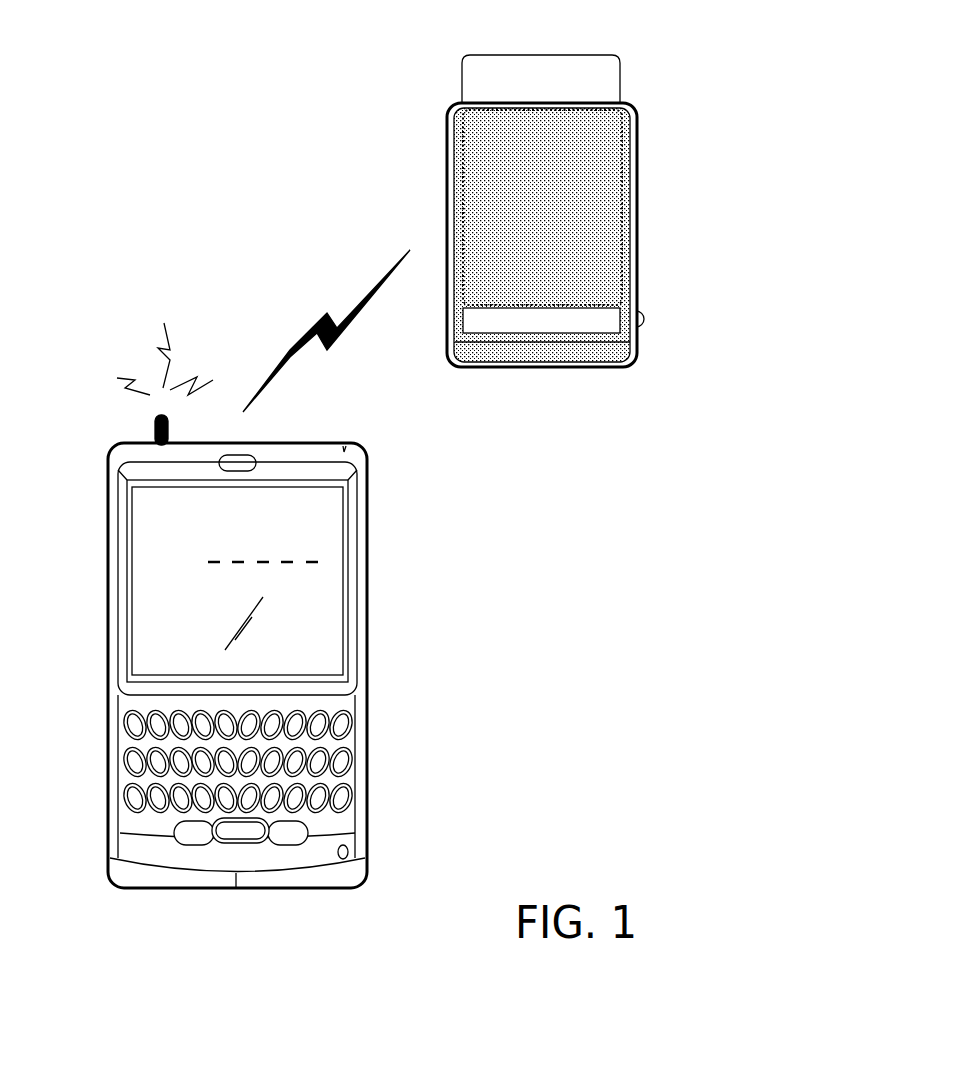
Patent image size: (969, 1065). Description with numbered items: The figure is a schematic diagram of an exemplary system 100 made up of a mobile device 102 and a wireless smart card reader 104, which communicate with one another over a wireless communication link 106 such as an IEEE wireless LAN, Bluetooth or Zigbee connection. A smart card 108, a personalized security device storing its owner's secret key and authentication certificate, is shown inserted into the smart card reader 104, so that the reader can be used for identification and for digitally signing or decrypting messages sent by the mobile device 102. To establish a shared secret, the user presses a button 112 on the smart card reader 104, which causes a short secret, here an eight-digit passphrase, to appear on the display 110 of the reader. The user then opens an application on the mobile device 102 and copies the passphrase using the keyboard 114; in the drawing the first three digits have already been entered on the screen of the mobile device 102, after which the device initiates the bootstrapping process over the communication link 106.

The system 100 is at (188, 125).
The mobile device 102 is at (108, 685).
The wireless smart card reader 104 is at (447, 242).
The wireless communication link 106 is at (292, 352).
The smart card 108 is at (507, 55).
The display 110 is at (553, 333).
The button 112 is at (643, 323).
The keyboard 114 is at (347, 706).